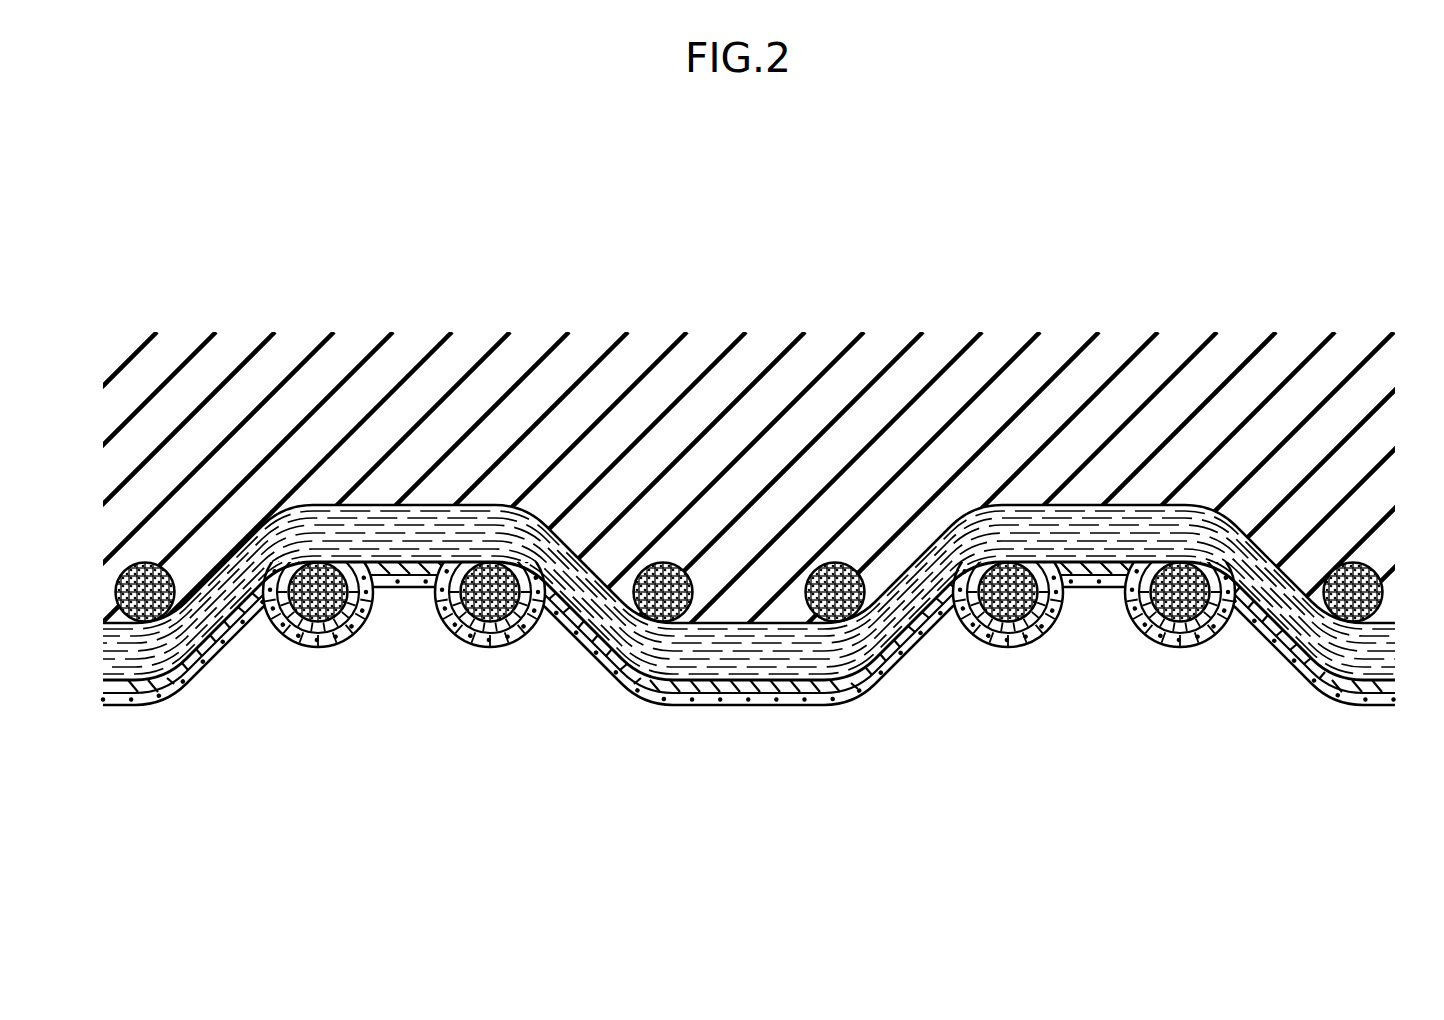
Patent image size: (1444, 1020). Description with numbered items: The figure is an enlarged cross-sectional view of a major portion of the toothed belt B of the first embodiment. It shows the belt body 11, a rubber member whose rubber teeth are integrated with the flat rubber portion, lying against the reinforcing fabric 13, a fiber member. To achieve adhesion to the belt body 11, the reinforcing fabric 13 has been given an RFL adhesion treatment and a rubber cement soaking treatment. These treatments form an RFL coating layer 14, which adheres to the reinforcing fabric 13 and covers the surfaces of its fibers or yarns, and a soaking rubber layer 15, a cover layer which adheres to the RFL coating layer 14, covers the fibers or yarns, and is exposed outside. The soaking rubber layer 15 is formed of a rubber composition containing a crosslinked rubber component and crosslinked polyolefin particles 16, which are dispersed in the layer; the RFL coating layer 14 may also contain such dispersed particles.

The belt body 11 is at (778, 392).
The reinforcing fabric 13 is at (1388, 623).
The RFL coating layer 14 is at (703, 685).
The soaking rubber layer 15 is at (803, 694).
The crosslinked polyolefin particles 16 is at (316, 648).
The toothed belt B is at (722, 467).